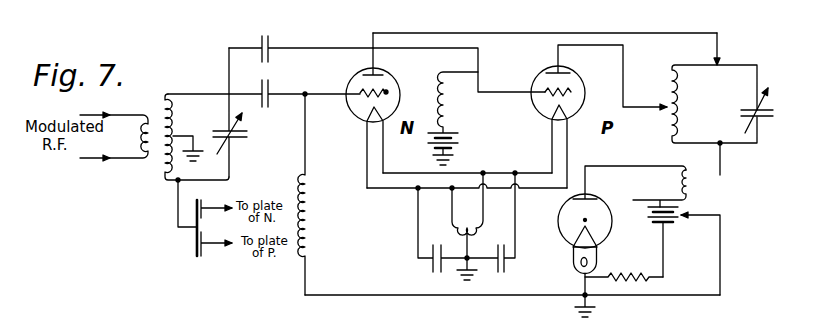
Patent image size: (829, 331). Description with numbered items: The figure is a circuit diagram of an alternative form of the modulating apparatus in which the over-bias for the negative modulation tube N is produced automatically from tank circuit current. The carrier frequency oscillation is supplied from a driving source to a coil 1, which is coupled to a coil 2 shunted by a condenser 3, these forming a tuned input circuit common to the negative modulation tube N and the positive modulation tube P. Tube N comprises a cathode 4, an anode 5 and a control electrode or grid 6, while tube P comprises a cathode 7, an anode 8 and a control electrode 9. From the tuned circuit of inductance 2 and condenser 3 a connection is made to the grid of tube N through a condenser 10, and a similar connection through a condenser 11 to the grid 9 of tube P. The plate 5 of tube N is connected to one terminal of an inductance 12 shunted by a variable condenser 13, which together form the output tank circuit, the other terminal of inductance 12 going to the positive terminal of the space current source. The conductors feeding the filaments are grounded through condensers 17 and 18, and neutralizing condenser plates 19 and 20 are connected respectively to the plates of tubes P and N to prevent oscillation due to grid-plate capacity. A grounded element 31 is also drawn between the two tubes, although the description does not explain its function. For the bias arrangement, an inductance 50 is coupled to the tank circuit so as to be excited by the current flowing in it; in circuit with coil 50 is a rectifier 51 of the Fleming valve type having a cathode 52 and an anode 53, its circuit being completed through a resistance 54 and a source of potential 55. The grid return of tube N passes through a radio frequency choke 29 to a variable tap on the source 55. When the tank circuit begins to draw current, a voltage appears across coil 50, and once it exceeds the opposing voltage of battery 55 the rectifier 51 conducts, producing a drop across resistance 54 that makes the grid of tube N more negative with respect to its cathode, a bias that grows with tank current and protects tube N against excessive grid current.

The coil 1 is at (128, 141).
The coil 2 is at (170, 95).
The condenser 3 is at (242, 112).
The cathode 4 is at (361, 119).
The anode 5 is at (363, 74).
The control electrode 6 is at (387, 92).
The cathode 7 is at (586, 99).
The anode 8 is at (546, 71).
The control electrode 9 is at (572, 89).
The condenser 10 is at (272, 88).
The condenser 11 is at (270, 44).
The inductance 12 is at (683, 104).
The variable condenser 13 is at (770, 92).
The condenser 17 is at (430, 267).
The condenser 18 is at (510, 267).
The plate 19 is at (202, 232).
The plate 20 is at (206, 204).
The radio frequency choke 29 is at (312, 225).
The grid bias coil and battery 31 is at (458, 118).
The inductance 50 is at (672, 186).
The rectifier 51 is at (567, 244).
The cathode 52 is at (573, 234).
The anode 53 is at (594, 199).
The resistance 54 is at (631, 284).
The source of potential 55 is at (677, 231).